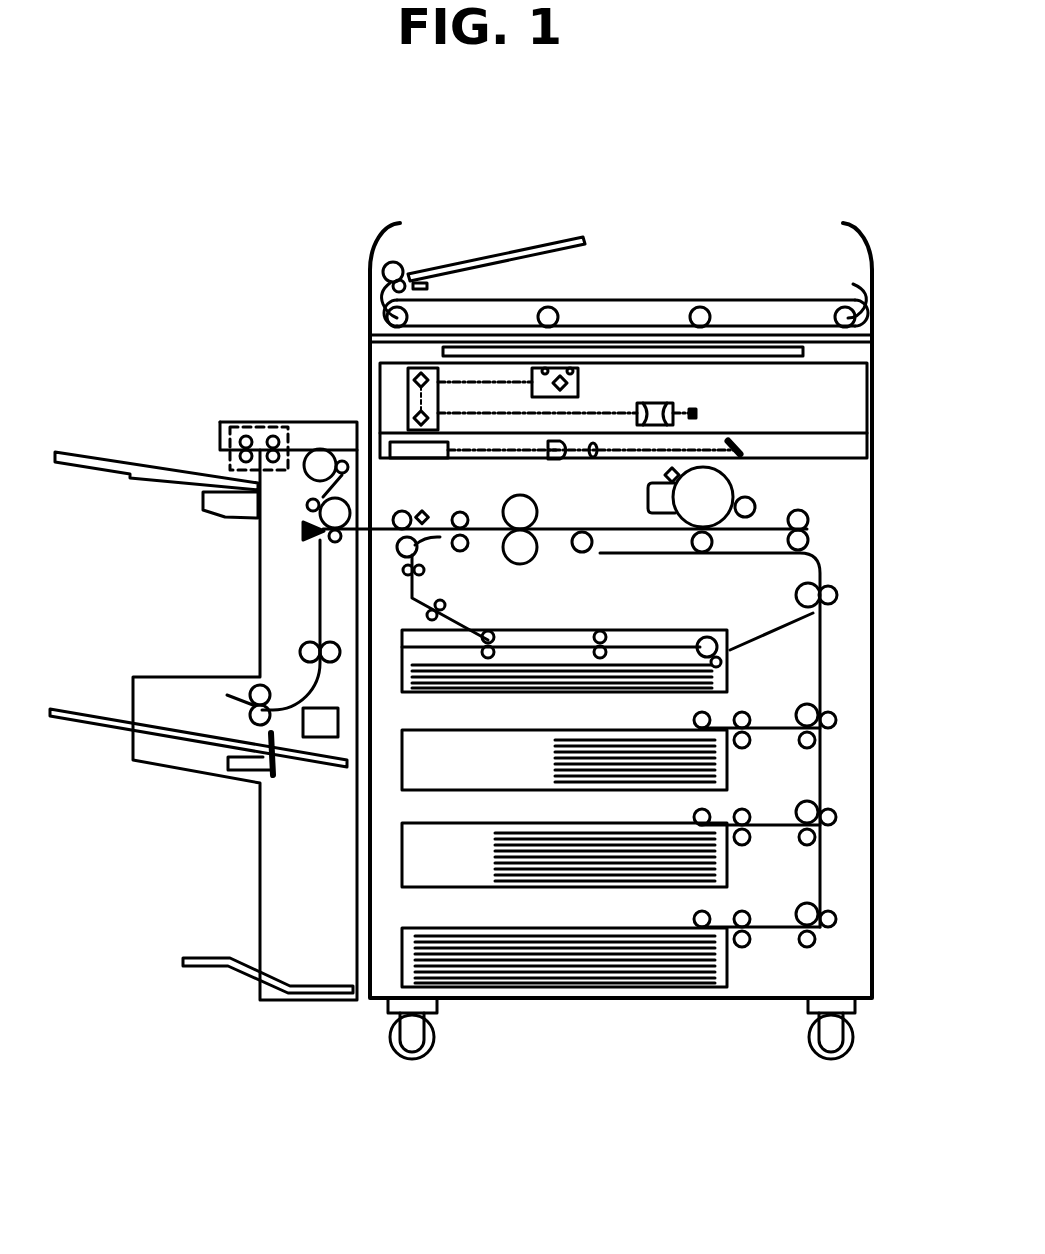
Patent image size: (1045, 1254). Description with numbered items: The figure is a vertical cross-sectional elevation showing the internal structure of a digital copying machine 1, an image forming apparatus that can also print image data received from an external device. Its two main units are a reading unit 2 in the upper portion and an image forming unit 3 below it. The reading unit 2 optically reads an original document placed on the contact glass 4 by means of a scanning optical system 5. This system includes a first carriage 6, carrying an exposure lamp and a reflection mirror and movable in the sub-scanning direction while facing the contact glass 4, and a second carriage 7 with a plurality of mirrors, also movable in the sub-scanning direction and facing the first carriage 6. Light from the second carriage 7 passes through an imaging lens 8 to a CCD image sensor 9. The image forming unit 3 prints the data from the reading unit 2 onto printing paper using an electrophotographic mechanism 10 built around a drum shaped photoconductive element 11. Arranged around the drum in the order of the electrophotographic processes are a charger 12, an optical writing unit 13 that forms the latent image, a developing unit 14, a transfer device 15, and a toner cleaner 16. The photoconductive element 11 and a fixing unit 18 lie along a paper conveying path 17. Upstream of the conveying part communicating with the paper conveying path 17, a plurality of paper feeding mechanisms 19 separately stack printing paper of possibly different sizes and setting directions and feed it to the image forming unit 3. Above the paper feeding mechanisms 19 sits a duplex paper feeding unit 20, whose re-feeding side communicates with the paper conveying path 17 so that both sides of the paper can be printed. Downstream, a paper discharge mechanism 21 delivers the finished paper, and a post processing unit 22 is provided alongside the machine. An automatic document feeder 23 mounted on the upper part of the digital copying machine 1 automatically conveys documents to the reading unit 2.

The digital copying machine 1 is at (752, 196).
The reading unit 2 is at (882, 393).
The image forming unit 3 is at (882, 447).
The contact glass 4 is at (742, 349).
The scanning optical system 5 is at (692, 393).
The first carriage 6 is at (578, 383).
The second carriage 7 is at (408, 393).
The imaging lens 8 is at (655, 403).
The CCD image sensor 9 is at (698, 412).
The electrophotographic mechanism 10 is at (750, 480).
The photoconductive element 11 is at (730, 532).
The charger 12 is at (683, 505).
The optical writing unit 13 is at (742, 447).
The developing unit 14 is at (755, 503).
The transfer device 15 is at (702, 553).
The toner cleaner 16 is at (650, 497).
The paper conveying path 17 is at (585, 553).
The fixing unit 18 is at (510, 498).
The paper feeding mechanisms 19 is at (402, 957).
The duplex paper feeding unit 20 is at (418, 635).
The paper discharge mechanism 21 is at (410, 518).
The post processing unit 22 is at (268, 553).
The automatic document feeder 23 is at (572, 270).